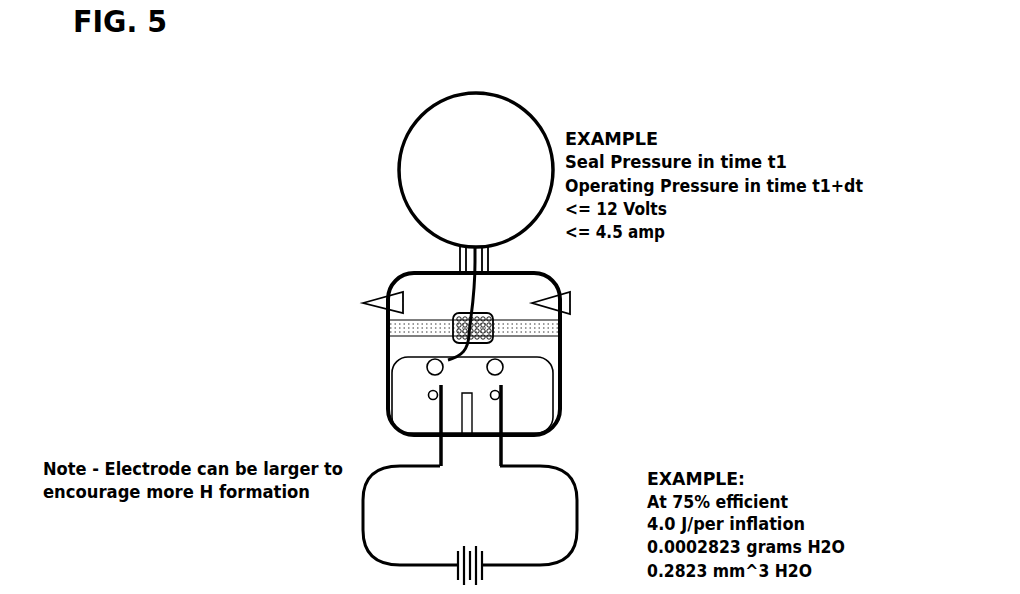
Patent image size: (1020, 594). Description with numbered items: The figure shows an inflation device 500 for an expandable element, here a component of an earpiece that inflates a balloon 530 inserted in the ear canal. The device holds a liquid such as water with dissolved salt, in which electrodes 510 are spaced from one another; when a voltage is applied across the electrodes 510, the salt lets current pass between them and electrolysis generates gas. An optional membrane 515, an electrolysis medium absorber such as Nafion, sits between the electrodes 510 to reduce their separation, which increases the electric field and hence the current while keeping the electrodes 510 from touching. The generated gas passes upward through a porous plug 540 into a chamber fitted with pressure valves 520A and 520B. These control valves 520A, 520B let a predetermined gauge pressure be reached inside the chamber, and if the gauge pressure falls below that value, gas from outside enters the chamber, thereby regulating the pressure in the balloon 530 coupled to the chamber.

The inflation device 500 is at (313, 357).
The electrodes 510 is at (437, 420).
The membrane 515 is at (468, 418).
The pressure valve 520A is at (390, 305).
The pressure valve 520B is at (570, 304).
The balloon 530 is at (400, 178).
The porous plug 540 is at (493, 338).